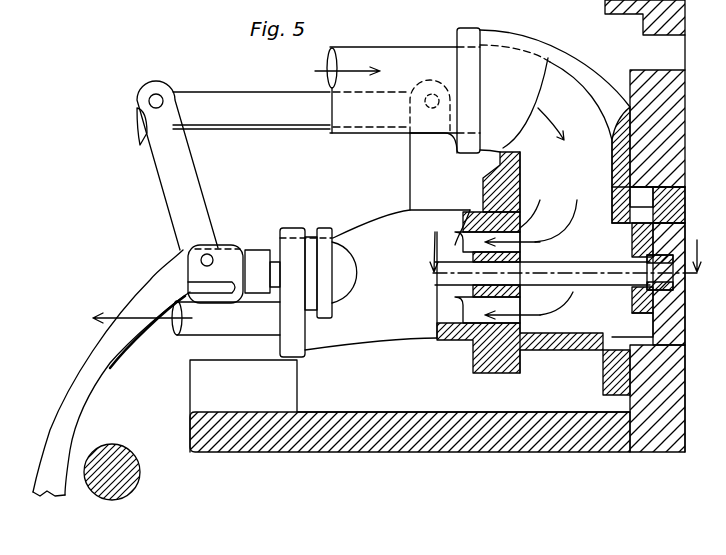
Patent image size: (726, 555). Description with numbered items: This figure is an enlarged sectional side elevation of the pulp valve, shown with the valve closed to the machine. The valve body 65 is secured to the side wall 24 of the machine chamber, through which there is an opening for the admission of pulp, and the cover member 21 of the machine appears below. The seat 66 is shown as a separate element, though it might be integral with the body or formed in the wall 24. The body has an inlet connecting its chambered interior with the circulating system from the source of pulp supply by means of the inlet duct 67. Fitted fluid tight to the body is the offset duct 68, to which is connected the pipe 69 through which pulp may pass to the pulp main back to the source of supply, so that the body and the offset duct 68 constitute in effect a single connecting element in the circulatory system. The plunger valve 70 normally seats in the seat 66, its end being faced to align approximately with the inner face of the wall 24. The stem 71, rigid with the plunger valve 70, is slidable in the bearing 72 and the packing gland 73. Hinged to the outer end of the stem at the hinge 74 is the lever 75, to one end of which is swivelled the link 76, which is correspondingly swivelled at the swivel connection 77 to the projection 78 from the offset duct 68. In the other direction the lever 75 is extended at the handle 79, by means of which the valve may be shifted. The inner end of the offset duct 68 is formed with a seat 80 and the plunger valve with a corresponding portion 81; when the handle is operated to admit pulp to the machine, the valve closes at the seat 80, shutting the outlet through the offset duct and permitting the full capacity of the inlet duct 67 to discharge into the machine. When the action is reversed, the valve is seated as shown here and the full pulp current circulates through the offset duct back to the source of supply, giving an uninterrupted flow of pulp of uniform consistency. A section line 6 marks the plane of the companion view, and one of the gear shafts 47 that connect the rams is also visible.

The inlet duct 67 is at (403, 63).
The swivel connection 77 is at (433, 95).
The link 76 is at (240, 110).
The projection 78 is at (428, 122).
The valve body 65 is at (567, 92).
The wall 24 is at (670, 147).
The seat 66 is at (670, 202).
The plunger valve 70 is at (683, 238).
The section line 6 is at (569, 241).
The seat 80 is at (520, 216).
The corresponding portion 81 is at (610, 216).
The bearing 72 is at (518, 270).
The stem 71 is at (578, 276).
The offset duct 68 is at (467, 264).
The packing gland 73 is at (298, 238).
The lever 75 is at (195, 211).
The hinge 74 is at (210, 261).
The pipe 69 is at (262, 320).
The cover member 21 is at (302, 450).
The handle 79 is at (65, 425).
The shaft 47 is at (128, 457).